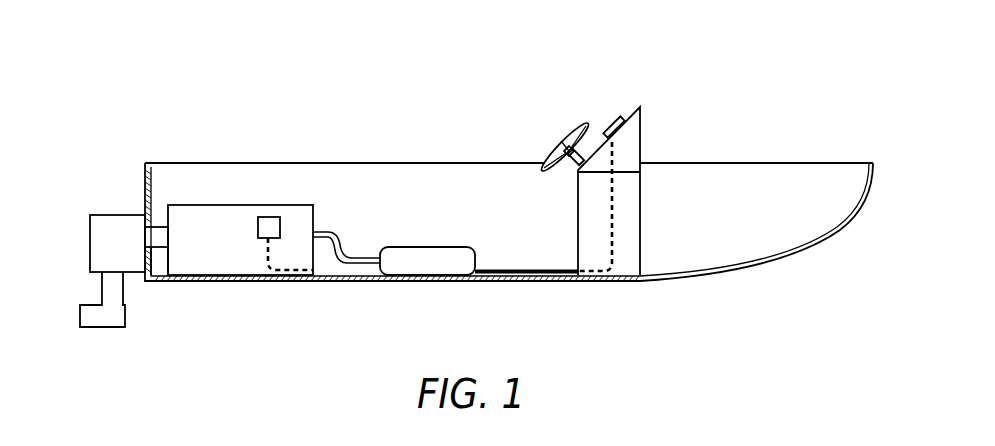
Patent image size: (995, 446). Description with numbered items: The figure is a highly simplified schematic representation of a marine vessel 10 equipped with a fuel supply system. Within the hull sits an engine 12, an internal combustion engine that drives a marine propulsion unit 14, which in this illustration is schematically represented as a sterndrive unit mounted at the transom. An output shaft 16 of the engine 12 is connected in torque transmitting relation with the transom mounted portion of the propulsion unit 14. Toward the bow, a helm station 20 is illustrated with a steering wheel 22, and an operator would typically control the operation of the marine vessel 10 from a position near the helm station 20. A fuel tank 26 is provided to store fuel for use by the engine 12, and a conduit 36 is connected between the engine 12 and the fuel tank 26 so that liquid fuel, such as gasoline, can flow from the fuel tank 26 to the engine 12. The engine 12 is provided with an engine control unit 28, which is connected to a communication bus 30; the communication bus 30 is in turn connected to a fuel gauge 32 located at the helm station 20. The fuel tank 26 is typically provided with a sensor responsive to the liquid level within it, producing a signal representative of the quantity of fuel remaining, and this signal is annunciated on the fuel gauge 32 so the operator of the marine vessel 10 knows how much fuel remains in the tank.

The marine vessel 10 is at (806, 95).
The engine 12 is at (225, 205).
The marine propulsion unit 14 is at (99, 196).
The output shaft 16 is at (160, 232).
The helm station 20 is at (641, 137).
The steering wheel 22 is at (562, 150).
The fuel tank 26 is at (430, 250).
The engine control unit 28 is at (258, 232).
The communication bus 30 is at (515, 268).
The fuel gauge 32 is at (614, 118).
The conduit 36 is at (347, 238).